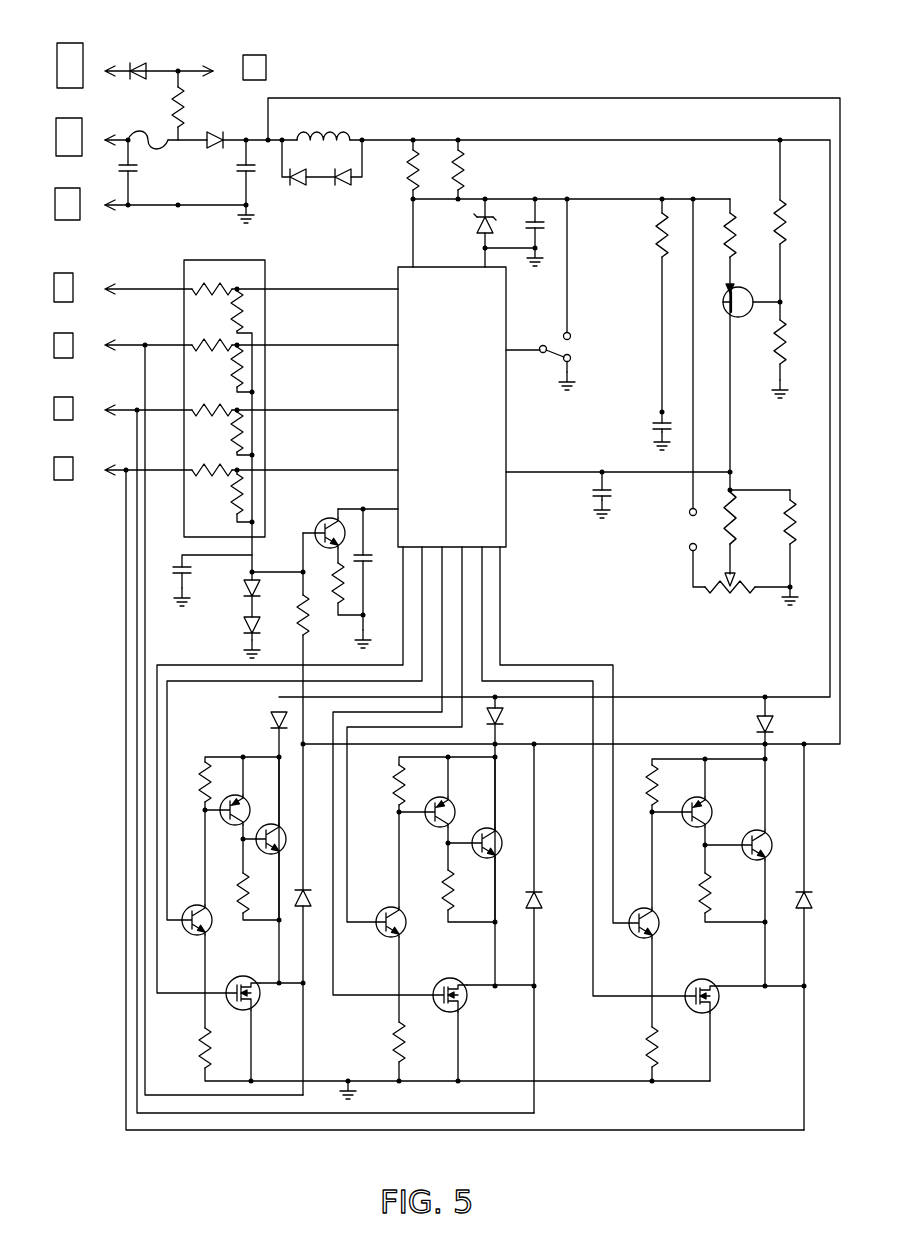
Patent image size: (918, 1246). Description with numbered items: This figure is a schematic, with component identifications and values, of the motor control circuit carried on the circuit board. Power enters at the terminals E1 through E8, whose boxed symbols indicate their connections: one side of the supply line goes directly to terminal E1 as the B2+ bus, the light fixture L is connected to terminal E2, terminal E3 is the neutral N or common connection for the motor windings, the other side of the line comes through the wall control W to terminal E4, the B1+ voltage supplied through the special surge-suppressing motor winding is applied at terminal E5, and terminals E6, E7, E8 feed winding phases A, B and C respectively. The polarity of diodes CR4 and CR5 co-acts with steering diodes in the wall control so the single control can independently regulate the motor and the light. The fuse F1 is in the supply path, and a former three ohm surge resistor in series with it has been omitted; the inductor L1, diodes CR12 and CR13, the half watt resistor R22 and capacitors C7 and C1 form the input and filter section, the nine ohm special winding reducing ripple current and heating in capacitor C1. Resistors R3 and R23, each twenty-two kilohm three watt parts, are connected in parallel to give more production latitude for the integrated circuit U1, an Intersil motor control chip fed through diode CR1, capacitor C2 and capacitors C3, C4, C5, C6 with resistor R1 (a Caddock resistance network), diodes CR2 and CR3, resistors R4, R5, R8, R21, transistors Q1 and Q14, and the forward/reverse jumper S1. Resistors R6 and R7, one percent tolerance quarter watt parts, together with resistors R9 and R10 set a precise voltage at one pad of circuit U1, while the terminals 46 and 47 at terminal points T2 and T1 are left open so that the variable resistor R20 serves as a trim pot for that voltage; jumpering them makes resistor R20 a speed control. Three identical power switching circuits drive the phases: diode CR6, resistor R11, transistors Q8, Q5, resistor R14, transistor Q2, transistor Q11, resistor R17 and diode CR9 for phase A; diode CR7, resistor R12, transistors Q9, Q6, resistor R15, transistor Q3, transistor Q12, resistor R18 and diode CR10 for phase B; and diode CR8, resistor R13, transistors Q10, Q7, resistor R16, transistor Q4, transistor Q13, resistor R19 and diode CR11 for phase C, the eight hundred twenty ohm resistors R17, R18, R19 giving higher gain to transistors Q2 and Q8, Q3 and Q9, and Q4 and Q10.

The terminal E1 is at (135, 65).
The terminal E2 is at (234, 69).
The terminal E3 is at (123, 282).
The terminal E4 is at (85, 211).
The terminal E5 is at (85, 134).
The terminal E6 is at (178, 707).
The terminal E7 is at (294, 748).
The terminal E8 is at (429, 786).
The diode CR1 is at (478, 222).
The diode CR2 is at (238, 592).
The diode CR3 is at (238, 625).
The diode CR4 is at (140, 62).
The diode CR5 is at (203, 130).
The diode CR6 is at (276, 720).
The diode CR7 is at (503, 726).
The diode CR8 is at (778, 721).
The diode CR9 is at (310, 900).
The diode CR10 is at (563, 880).
The diode CR11 is at (809, 895).
The diode CR12 is at (322, 194).
The diode CR13 is at (341, 186).
The resistance network R1 is at (226, 417).
The resistor R3 is at (410, 168).
The resistor R4 is at (659, 226).
The resistor R5 is at (735, 226).
The resistor R6 is at (786, 212).
The resistor R7 is at (788, 350).
The resistor R8 is at (300, 626).
The resistor R9 is at (742, 510).
The resistor R10 is at (800, 505).
The resistor R11 is at (207, 790).
The resistor R12 is at (400, 790).
The resistor R13 is at (640, 785).
The resistor R14 is at (240, 885).
The resistor R15 is at (443, 895).
The resistor R16 is at (708, 888).
The resistor R17 is at (200, 1040).
The resistor R18 is at (395, 1044).
The resistor R19 is at (648, 1030).
The variable resistor R20 is at (742, 592).
The resistor R21 is at (336, 590).
The resistor R22 is at (179, 93).
The resistor R23 is at (461, 158).
The capacitor C1 is at (240, 170).
The capacitor C2 is at (528, 222).
The capacitor C3 is at (178, 566).
The capacitor C4 is at (595, 490).
The capacitor C5 is at (362, 552).
The capacitor C6 is at (655, 428).
The capacitor C7 is at (138, 170).
The transistor Q1 is at (723, 302).
The transistor Q2 is at (194, 905).
The transistor Q3 is at (385, 908).
The transistor Q4 is at (657, 915).
The transistor Q5 is at (272, 824).
The transistor Q6 is at (478, 830).
The transistor Q7 is at (742, 835).
The transistor Q8 is at (233, 795).
The transistor Q9 is at (430, 803).
The transistor Q10 is at (690, 800).
The transistor Q11 is at (258, 960).
The transistor Q12 is at (458, 980).
The transistor Q13 is at (718, 1010).
The transistor Q14 is at (332, 517).
The inductor L1 is at (328, 130).
The fuse F1 is at (160, 135).
The jumper switch S1 is at (556, 342).
The integrated circuit U1 is at (445, 623).
The terminal point T1 is at (675, 547).
The terminal point T2 is at (676, 362).
The terminal 46 is at (688, 515).
The terminal 47 is at (688, 552).